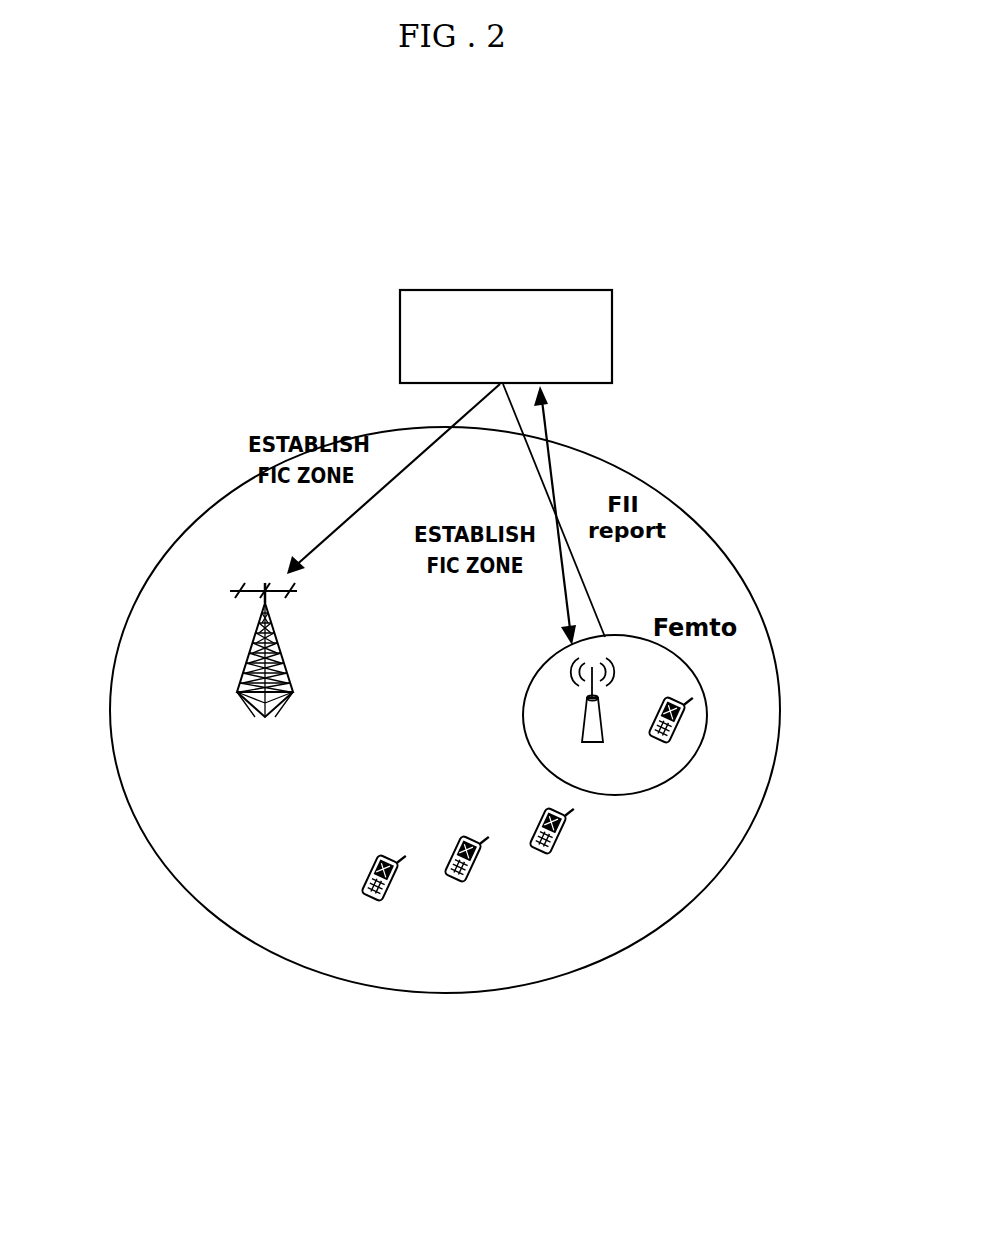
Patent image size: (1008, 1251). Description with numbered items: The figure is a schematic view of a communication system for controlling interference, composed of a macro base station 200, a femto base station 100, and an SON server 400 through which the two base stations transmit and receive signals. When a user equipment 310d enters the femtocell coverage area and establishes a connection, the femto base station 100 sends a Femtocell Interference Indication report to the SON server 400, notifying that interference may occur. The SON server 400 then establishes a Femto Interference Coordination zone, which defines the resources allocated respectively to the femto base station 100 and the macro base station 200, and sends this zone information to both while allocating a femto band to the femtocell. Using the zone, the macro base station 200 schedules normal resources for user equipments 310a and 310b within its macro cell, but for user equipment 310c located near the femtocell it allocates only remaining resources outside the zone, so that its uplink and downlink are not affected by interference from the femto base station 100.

The SON server 400 is at (557, 290).
The macro base station 200 is at (250, 655).
The femto base station 100 is at (594, 732).
The user equipment 310a is at (395, 878).
The user equipment 310b is at (480, 860).
The user equipment 310c is at (566, 833).
The user equipment 310d is at (707, 713).